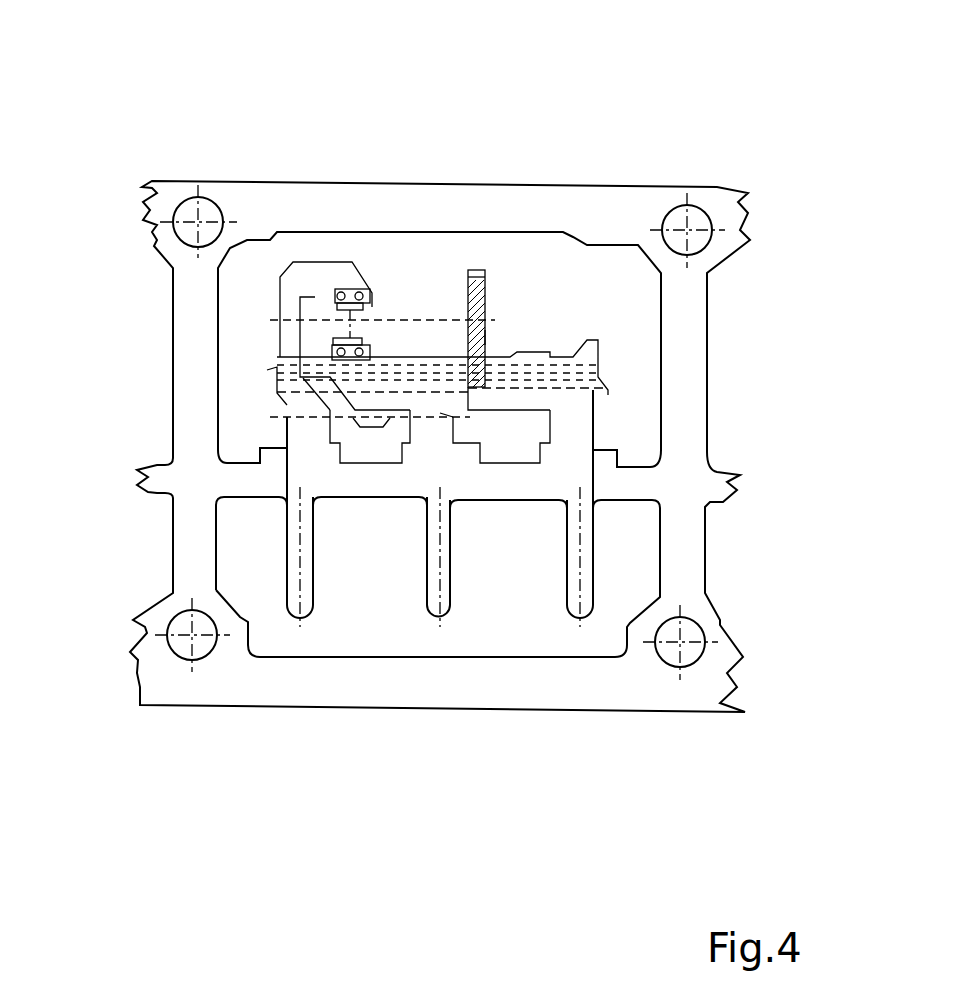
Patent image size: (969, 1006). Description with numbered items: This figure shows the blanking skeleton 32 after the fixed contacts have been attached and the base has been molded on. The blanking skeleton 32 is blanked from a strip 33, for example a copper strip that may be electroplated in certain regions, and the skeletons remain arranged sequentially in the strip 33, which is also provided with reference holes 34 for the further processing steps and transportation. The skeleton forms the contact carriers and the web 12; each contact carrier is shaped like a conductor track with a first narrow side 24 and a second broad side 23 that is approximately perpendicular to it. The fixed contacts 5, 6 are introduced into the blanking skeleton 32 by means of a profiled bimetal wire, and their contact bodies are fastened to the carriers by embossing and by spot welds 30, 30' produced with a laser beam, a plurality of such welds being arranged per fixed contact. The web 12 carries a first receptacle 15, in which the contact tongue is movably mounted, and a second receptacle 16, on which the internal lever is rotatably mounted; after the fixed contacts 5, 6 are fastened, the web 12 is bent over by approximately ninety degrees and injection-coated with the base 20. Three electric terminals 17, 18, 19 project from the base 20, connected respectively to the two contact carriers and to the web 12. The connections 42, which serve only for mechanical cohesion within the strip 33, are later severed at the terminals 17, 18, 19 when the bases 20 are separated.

The fixed contact 5 is at (353, 290).
The fixed contact 6 is at (333, 348).
The web 12 is at (485, 338).
The first receptacle 15 is at (462, 312).
The second receptacle 16 is at (480, 283).
The electric terminal 17 is at (292, 586).
The electric terminal 18 is at (443, 588).
The electric terminal 19 is at (572, 588).
The base 20 is at (567, 362).
The second broad side 23 is at (327, 277).
The first narrow side 24 is at (316, 298).
The spot weld 30 is at (347, 153).
The spot weld 30' is at (394, 157).
The blanking skeleton 32 is at (185, 528).
The strip 33 is at (502, 208).
The reference holes 34 is at (187, 216).
The connections 42 is at (387, 483).